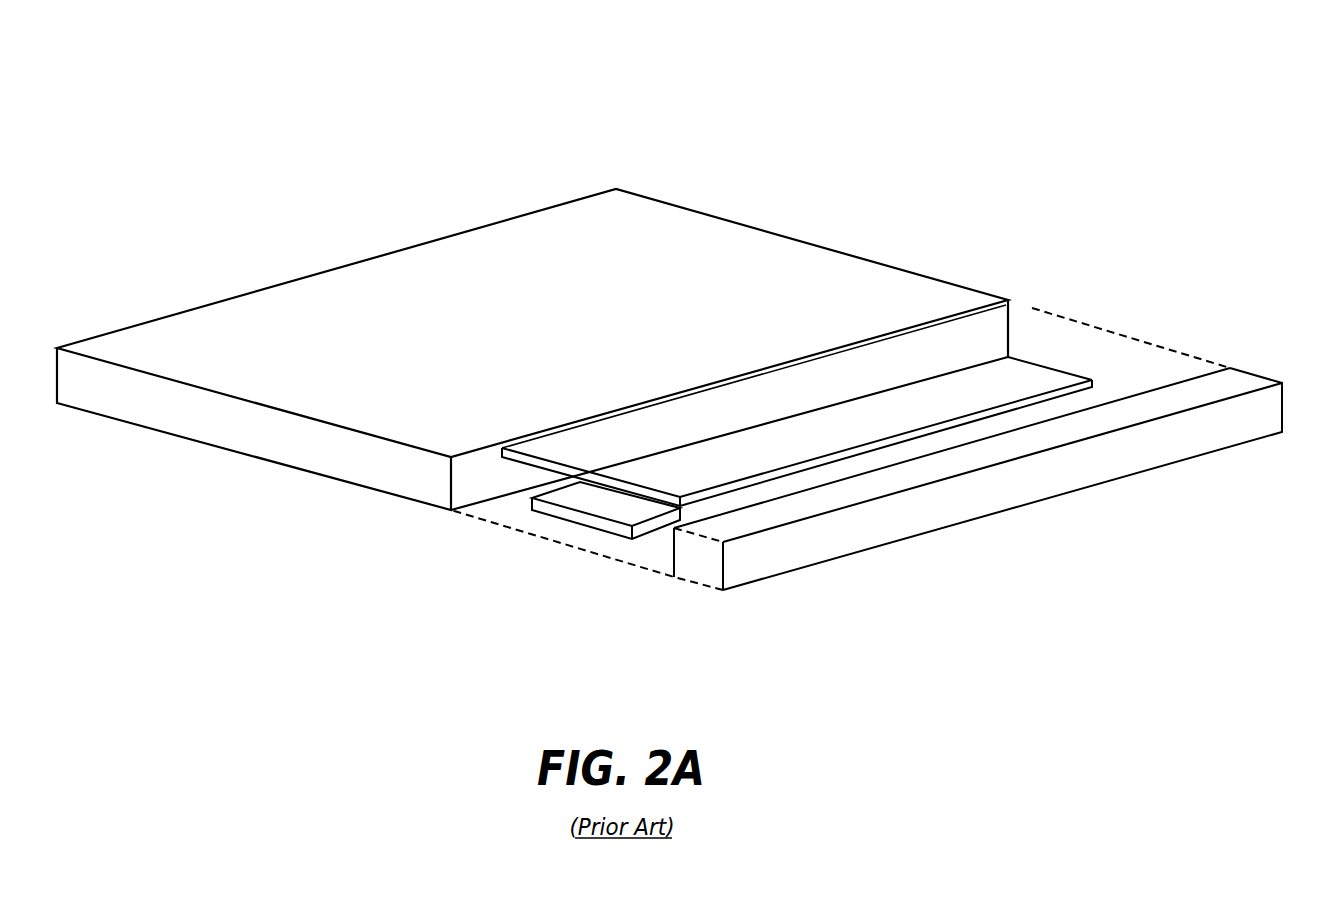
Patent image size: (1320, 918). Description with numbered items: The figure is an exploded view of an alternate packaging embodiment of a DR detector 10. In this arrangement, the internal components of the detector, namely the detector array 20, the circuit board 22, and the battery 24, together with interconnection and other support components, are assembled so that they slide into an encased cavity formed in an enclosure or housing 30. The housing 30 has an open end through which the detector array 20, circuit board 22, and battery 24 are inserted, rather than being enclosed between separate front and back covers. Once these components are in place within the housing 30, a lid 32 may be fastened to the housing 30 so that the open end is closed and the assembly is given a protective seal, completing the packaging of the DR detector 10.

The DR detector 10 is at (793, 68).
The detector array 20 is at (1015, 357).
The circuit board 22 is at (913, 450).
The battery 24 is at (562, 527).
The housing 30 is at (415, 243).
The lid 32 is at (1048, 500).